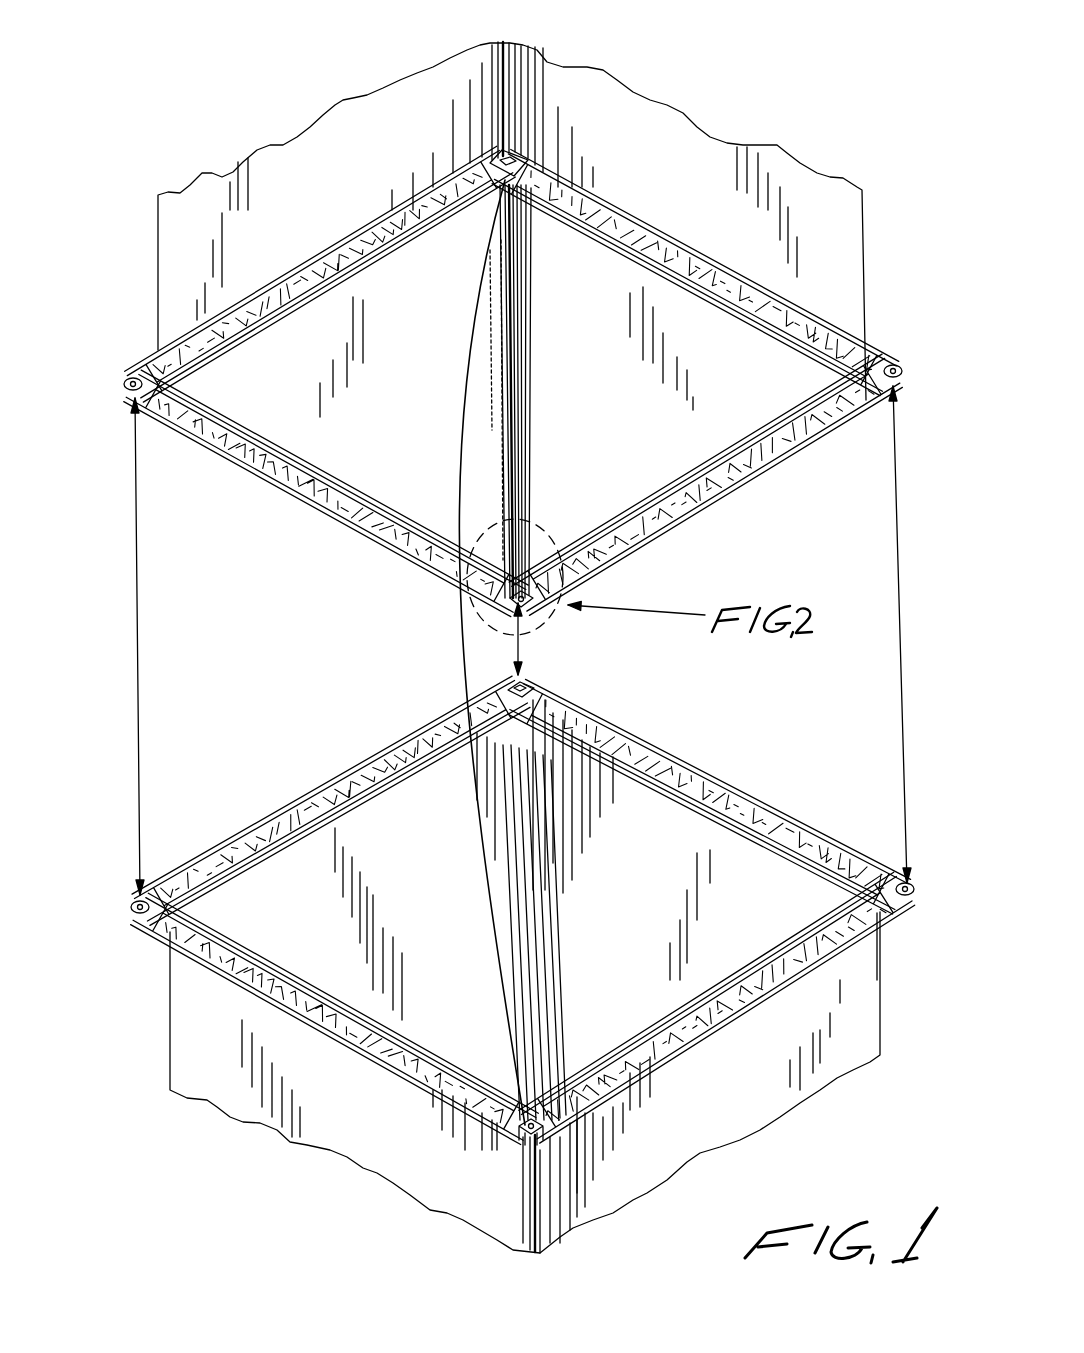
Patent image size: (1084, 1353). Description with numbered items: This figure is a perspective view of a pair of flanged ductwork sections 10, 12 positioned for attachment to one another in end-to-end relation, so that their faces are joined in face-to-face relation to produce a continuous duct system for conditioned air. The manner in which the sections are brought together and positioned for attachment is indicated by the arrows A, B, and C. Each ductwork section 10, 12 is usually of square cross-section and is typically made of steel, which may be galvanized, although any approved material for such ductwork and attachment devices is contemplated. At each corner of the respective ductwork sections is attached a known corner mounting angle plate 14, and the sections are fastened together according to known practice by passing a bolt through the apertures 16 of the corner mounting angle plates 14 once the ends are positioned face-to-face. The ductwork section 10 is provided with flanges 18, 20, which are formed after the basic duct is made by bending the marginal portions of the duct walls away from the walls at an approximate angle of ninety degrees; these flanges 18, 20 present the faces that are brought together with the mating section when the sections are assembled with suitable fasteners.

The flanged ductwork section 10 is at (700, 182).
The flanged ductwork section 12 is at (752, 1106).
The corner mounting angle plate 14 is at (133, 372).
The aperture 16 is at (127, 384).
The flange 18 is at (397, 553).
The flange 20 is at (628, 563).
The arrow A is at (452, 612).
The arrow B is at (138, 656).
The arrow C is at (900, 588).